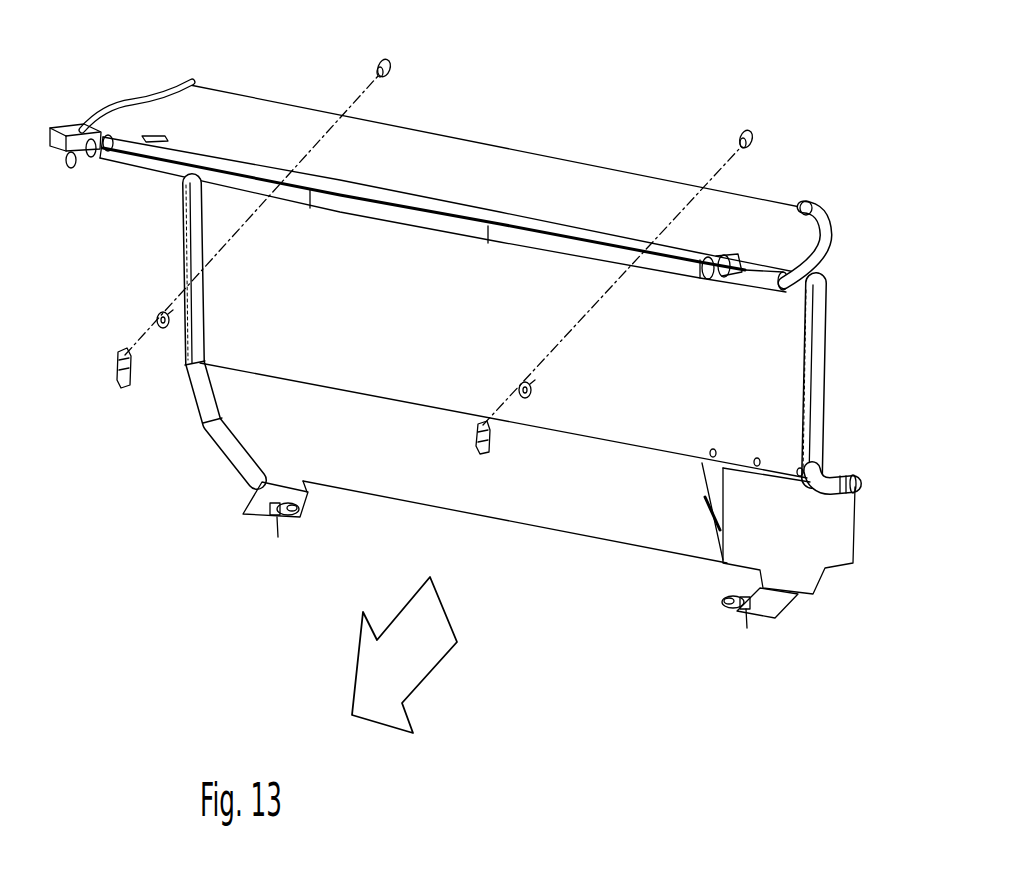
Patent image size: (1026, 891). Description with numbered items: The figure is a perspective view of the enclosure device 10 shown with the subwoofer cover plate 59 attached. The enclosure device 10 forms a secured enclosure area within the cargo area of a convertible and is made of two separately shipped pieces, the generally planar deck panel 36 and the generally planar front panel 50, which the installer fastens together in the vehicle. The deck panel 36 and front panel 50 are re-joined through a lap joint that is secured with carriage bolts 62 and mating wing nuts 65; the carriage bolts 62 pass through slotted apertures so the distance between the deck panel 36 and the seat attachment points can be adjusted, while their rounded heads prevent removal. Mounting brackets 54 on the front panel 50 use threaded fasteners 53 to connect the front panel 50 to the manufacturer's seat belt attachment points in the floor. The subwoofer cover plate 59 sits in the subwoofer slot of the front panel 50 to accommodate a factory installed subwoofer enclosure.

The enclosure device 10 is at (453, 401).
The deck panel 36 is at (533, 180).
The front panel 50 is at (472, 334).
The threaded fasteners 53 is at (281, 536).
The mounting brackets 54 is at (243, 514).
The subwoofer cover plate 59 is at (795, 546).
The carriage bolts 62 is at (397, 77).
The wing nuts 65 is at (131, 366).